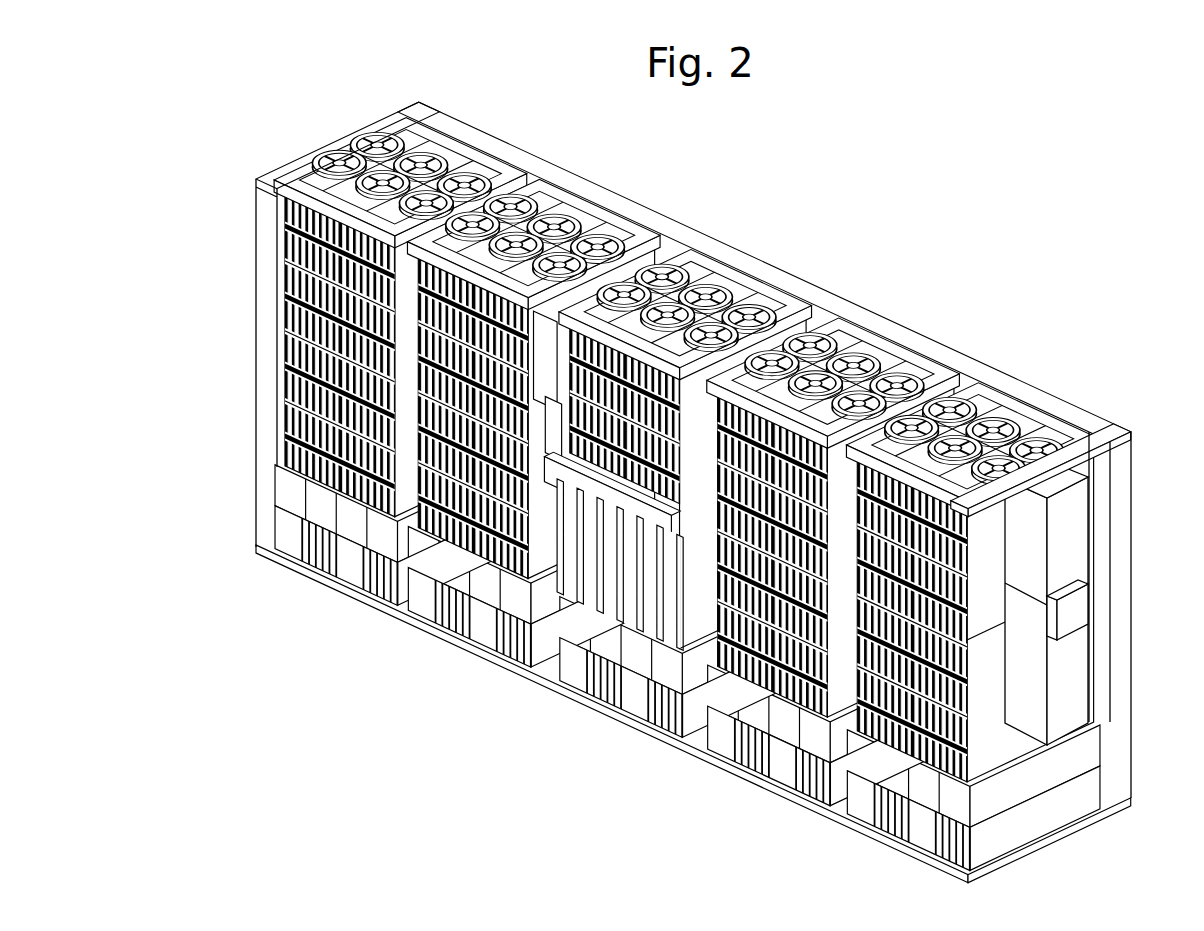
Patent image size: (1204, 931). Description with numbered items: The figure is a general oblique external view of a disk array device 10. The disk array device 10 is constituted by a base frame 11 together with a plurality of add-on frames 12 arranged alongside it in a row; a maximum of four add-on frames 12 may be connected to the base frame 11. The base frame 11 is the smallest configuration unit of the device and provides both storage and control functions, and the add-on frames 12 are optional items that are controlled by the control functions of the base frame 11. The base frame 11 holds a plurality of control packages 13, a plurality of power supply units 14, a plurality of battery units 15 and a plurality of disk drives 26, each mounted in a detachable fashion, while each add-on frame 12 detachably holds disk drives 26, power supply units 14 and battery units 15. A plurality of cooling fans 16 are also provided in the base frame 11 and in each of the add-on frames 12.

The disk array device 10 is at (693, 489).
The base frame 11 is at (757, 252).
The add-on frame 12 is at (492, 134).
The control package 13 is at (575, 600).
The power supply unit 14 is at (277, 498).
The battery unit 15 is at (363, 575).
The cooling fan 16 is at (320, 150).
The disk drive 26 is at (284, 250).